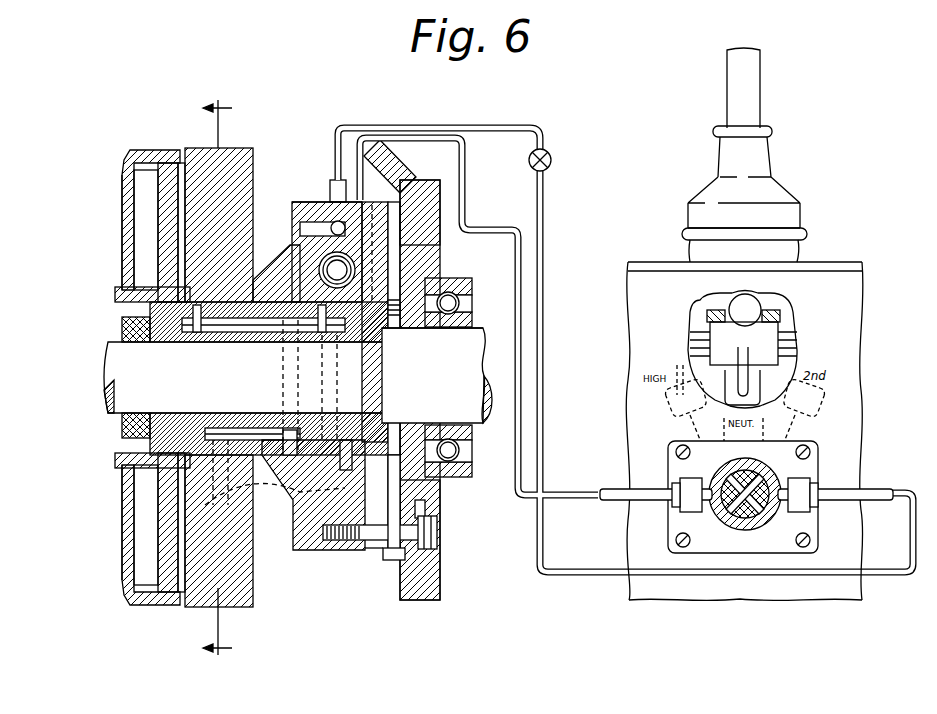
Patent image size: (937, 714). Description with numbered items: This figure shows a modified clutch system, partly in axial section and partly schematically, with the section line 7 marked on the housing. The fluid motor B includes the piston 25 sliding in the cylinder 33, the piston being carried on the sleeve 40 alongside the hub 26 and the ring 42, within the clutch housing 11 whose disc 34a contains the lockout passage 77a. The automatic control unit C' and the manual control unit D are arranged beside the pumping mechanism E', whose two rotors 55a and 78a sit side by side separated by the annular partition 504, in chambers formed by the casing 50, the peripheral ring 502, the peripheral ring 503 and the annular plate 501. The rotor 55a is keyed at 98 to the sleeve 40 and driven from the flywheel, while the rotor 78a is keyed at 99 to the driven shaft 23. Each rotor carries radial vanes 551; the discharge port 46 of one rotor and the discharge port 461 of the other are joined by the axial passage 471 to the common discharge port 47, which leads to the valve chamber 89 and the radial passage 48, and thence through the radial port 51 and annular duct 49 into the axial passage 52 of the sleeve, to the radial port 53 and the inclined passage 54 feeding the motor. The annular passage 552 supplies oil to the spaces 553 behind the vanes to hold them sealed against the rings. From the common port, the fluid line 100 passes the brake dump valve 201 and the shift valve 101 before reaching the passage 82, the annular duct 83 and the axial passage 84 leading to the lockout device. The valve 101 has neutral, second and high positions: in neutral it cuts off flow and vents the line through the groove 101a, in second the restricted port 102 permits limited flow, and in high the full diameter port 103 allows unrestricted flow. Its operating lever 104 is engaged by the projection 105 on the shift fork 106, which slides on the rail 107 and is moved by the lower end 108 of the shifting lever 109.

The section line 7- 7 is at (217, 381).
The fluid motor B is at (137, 147).
The automatic control unit C' is at (229, 202).
The manual control unit D is at (312, 199).
The pumping mechanism E' is at (421, 203).
The clutch housing 11 is at (388, 152).
The driven shaft 23 is at (474, 360).
The piston 25 is at (150, 212).
The hub 26 is at (124, 294).
The cylinder 33 is at (134, 190).
The disc 34a is at (232, 606).
The sleeve 40 is at (243, 377).
The hub ring 42 is at (120, 323).
The discharge port 46 is at (304, 201).
The common discharge port 47 is at (337, 200).
The radial passage 48 is at (276, 273).
The annular duct 49 is at (345, 439).
The housing 50 is at (321, 562).
The radial port 51 is at (324, 335).
The axial passage 52 is at (258, 333).
The radial port 53 is at (214, 343).
The inclined passage 54 is at (197, 344).
The rotor 55a is at (345, 544).
The passage 77a is at (313, 495).
The rotor 78a is at (402, 490).
The passage 82 is at (326, 228).
The annular duct 83 is at (291, 429).
The axial passage 84 is at (243, 427).
The valve chamber 89 is at (319, 262).
The key 98 is at (433, 375).
The key 99 is at (410, 336).
The fluid line 100 is at (478, 231).
The shift valve 101 is at (735, 560).
The groove 101a is at (706, 498).
The restricted port 102 is at (790, 480).
The full diameter port 103 is at (766, 560).
The operating lever 104 is at (802, 396).
The projection 105 is at (748, 385).
The shift fork 106 is at (780, 333).
The rail 107 is at (790, 347).
The lower end 108 is at (758, 310).
The shifting lever 109 is at (762, 96).
The brake dump valve 201 is at (552, 161).
The discharge port 461 is at (401, 250).
The axial passage 471 is at (376, 239).
The annular plate 501 is at (426, 516).
The peripheral ring 502 is at (376, 560).
The peripheral ring 503 is at (394, 560).
The annular partition 504 is at (383, 559).
The radial vane 551 is at (382, 266).
The annular passage 552 is at (406, 280).
The spaces 553 is at (275, 494).